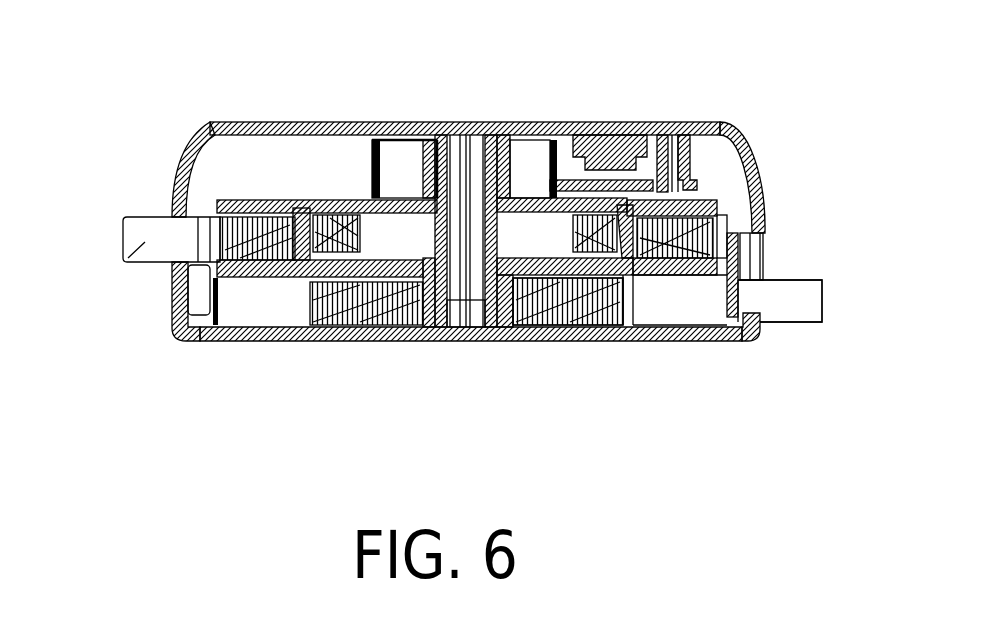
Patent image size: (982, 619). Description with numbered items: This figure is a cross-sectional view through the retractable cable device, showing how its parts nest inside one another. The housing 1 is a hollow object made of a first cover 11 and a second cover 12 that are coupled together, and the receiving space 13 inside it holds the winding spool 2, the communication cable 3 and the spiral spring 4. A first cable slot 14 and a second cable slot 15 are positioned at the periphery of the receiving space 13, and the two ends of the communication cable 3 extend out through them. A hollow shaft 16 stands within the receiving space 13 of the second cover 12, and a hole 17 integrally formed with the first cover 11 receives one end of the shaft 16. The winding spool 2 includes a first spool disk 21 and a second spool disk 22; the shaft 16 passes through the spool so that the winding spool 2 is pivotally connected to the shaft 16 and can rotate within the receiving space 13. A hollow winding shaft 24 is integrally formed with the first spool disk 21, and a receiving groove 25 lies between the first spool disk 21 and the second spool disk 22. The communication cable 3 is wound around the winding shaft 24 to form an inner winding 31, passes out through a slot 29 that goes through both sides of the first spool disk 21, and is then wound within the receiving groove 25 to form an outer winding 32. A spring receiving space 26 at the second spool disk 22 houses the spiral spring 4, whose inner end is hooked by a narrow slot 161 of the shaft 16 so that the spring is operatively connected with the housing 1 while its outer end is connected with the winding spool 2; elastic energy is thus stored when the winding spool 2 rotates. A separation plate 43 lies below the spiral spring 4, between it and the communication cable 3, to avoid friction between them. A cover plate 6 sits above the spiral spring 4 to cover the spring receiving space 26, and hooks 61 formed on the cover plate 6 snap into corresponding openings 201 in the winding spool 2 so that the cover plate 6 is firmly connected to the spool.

The housing 1 is at (200, 114).
The winding spool 2 is at (250, 290).
The communication cable 3 is at (760, 235).
The spiral spring 4 is at (352, 215).
The cover plate 6 is at (528, 193).
The first cover 11 is at (710, 338).
The second cover 12 is at (580, 136).
The receiving space 13 is at (305, 163).
The first cable slot 14 is at (758, 326).
The second cable slot 15 is at (170, 215).
The shaft 16 is at (483, 162).
The hole 17 is at (468, 326).
The first spool disk 21 is at (694, 280).
The second spool disk 22 is at (747, 197).
The winding shaft 24 is at (420, 325).
The receiving groove 25 is at (238, 200).
The spring receiving space 26 is at (310, 327).
The slot 29 is at (358, 322).
The inner winding 31 is at (598, 278).
The outer winding 32 is at (717, 228).
The separation plate 43 is at (548, 323).
The hooks 61 is at (632, 276).
The narrow slot 161 is at (463, 168).
The openings 201 is at (651, 276).